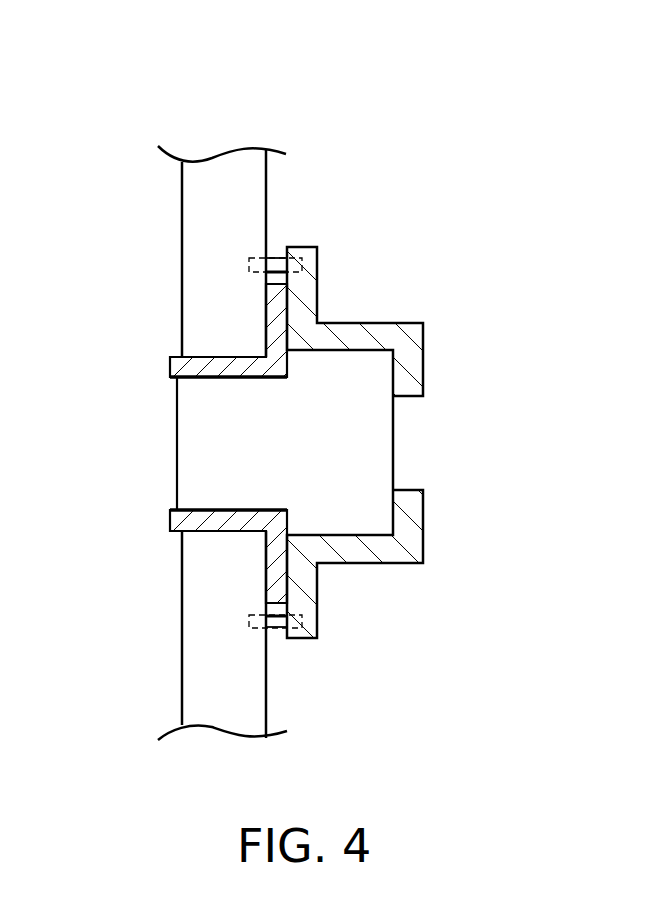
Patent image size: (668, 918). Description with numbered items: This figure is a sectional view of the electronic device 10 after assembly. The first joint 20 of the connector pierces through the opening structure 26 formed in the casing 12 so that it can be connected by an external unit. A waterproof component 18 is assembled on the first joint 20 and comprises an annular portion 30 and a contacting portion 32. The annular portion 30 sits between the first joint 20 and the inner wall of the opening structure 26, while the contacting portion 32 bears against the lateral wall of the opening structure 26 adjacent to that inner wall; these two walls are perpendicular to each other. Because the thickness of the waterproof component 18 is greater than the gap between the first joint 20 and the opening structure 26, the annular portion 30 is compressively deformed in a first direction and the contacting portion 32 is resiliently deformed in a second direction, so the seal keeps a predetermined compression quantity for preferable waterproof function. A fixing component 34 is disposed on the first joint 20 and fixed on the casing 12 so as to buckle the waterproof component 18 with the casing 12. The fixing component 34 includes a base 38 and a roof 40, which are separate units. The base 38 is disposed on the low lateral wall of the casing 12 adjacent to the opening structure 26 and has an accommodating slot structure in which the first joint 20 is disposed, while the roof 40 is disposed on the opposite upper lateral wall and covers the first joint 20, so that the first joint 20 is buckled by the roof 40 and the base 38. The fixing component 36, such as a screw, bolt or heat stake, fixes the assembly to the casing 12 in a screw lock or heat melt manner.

The electronic device 10 is at (525, 128).
The casing 12 is at (210, 232).
The waterproof component 18 is at (177, 365).
The first joint 20 is at (358, 440).
The opening structure 26 is at (165, 420).
The annular portion 30 is at (190, 523).
The contacting portion 32 is at (273, 568).
The fixing component 34 is at (552, 331).
The fixing component 36 is at (273, 262).
The base 38 is at (410, 530).
The roof 40 is at (423, 355).